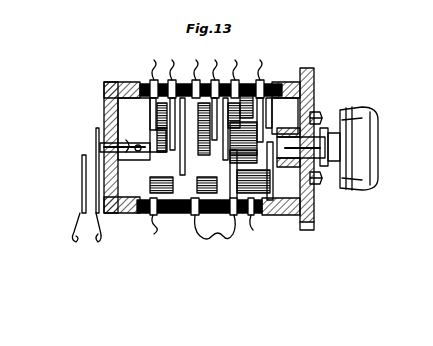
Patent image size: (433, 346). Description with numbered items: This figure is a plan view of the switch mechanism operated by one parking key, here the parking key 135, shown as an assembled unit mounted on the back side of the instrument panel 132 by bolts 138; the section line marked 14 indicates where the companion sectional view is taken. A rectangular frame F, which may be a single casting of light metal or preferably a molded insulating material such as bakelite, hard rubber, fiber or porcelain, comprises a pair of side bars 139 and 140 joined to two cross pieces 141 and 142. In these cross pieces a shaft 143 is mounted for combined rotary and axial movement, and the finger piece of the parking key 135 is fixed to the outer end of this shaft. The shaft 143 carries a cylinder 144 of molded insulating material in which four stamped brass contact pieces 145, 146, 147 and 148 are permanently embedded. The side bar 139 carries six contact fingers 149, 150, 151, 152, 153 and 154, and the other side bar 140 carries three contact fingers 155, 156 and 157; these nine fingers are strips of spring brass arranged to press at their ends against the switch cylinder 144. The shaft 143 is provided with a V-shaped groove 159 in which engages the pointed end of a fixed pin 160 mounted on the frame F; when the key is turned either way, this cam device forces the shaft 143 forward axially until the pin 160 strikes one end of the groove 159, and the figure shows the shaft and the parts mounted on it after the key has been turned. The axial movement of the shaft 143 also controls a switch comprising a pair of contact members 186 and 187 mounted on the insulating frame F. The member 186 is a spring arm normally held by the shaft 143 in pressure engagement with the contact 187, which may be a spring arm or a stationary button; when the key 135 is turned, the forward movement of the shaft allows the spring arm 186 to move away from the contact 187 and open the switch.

The panel 132 is at (312, 225).
The parking key 135 is at (366, 186).
The bolts 138 is at (318, 114).
The side bar 139 is at (283, 95).
The side bar 140 is at (250, 210).
The cross piece 141 is at (312, 100).
The cross piece 142 is at (105, 99).
The shaft 143 is at (310, 71).
The cylinder 144 is at (146, 226).
The contact piece 145 is at (290, 218).
The contact piece 146 is at (240, 80).
The contact piece 147 is at (178, 80).
The contact piece 148 is at (192, 215).
The contact finger 149 is at (268, 82).
The contact finger 150 is at (250, 80).
The contact finger 151 is at (222, 80).
The contact finger 152 is at (206, 80).
The contact finger 153 is at (160, 82).
The contact finger 154 is at (148, 82).
The contact finger 155 is at (247, 217).
The contact finger 156 is at (188, 213).
The contact finger 157 is at (143, 217).
The V-shaped groove 159 is at (100, 147).
The pin 160 is at (100, 150).
The contact member 186 is at (96, 137).
The contact member 187 is at (83, 175).
The section line 14- 14 is at (124, 56).
The frame F is at (104, 84).